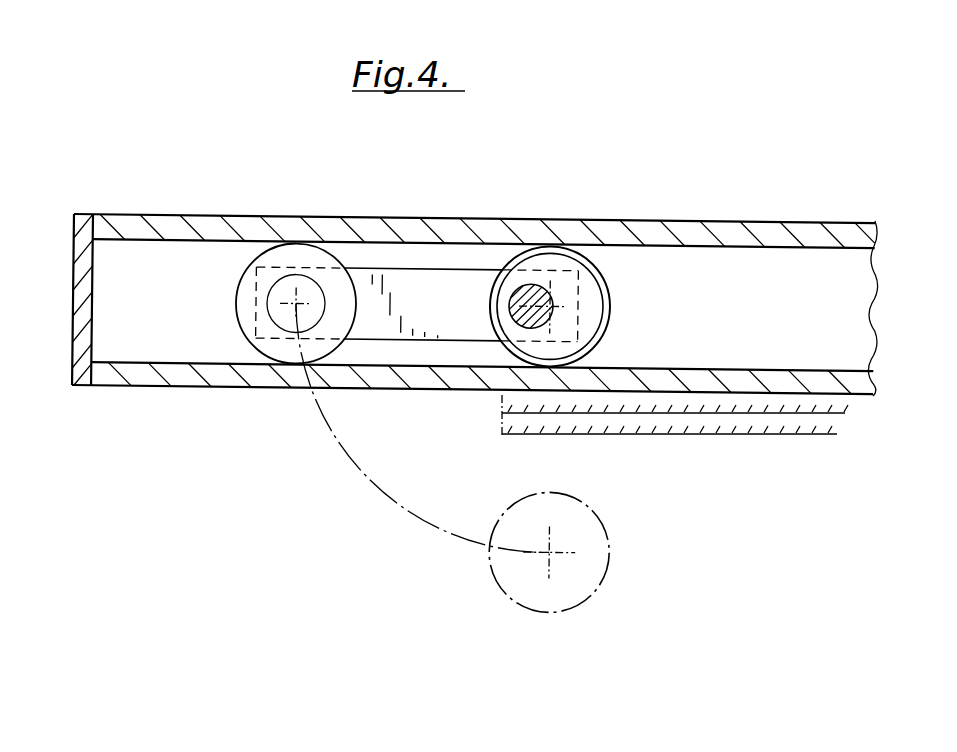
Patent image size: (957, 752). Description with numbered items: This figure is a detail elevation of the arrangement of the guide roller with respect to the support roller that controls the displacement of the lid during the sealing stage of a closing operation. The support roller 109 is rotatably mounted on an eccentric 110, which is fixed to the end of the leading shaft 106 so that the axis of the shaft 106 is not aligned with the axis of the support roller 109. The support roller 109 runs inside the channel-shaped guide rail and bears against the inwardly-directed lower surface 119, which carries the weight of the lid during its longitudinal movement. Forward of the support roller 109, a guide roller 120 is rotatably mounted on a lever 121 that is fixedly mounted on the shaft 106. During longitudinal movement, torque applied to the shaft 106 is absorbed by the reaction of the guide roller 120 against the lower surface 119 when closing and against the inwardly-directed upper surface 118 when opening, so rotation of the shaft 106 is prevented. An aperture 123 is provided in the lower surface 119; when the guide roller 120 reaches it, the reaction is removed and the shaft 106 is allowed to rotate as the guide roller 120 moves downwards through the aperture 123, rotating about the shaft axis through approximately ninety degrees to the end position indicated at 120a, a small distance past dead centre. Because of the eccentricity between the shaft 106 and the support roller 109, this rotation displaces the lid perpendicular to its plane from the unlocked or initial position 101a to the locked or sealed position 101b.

The unlocked or initial position of the lid 101a is at (852, 413).
The locked or sealed position of the lid 101b is at (845, 434).
The leading shaft 106 is at (552, 320).
The support roller 109 is at (600, 250).
The eccentric 110 is at (595, 305).
The upper surface of the guide rail 118 is at (842, 247).
The lower surface of the guide rail 119 is at (757, 372).
The guide roller 120 is at (312, 255).
The end position of the guide roller 120a is at (613, 553).
The lever 121 is at (437, 275).
The aperture 123 is at (205, 378).